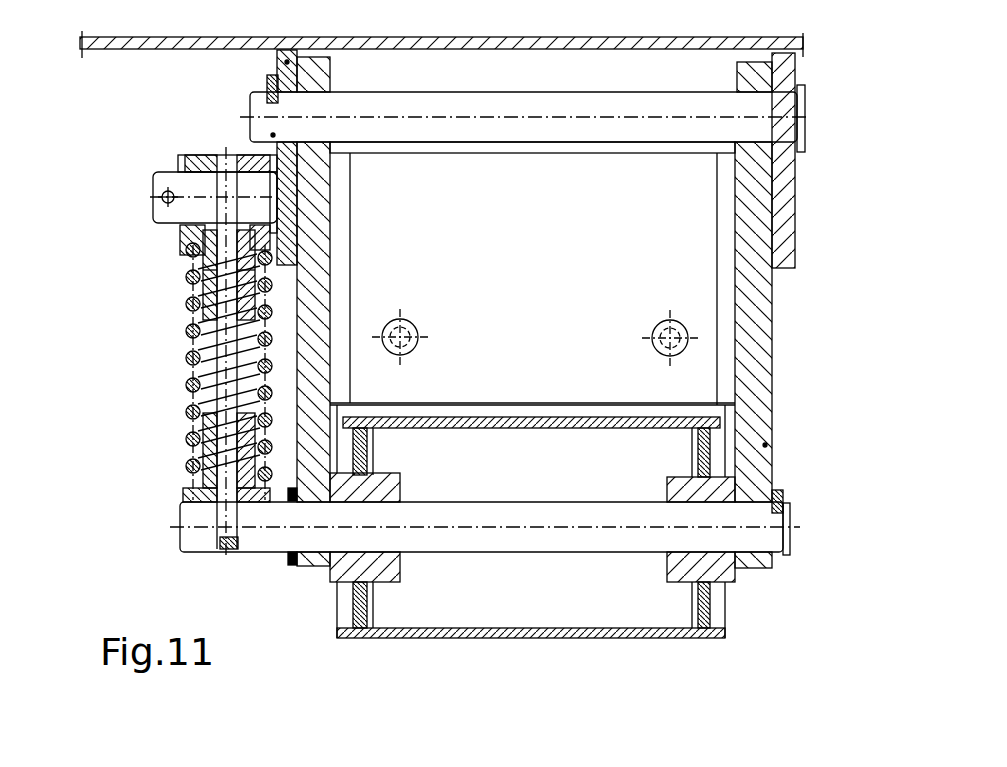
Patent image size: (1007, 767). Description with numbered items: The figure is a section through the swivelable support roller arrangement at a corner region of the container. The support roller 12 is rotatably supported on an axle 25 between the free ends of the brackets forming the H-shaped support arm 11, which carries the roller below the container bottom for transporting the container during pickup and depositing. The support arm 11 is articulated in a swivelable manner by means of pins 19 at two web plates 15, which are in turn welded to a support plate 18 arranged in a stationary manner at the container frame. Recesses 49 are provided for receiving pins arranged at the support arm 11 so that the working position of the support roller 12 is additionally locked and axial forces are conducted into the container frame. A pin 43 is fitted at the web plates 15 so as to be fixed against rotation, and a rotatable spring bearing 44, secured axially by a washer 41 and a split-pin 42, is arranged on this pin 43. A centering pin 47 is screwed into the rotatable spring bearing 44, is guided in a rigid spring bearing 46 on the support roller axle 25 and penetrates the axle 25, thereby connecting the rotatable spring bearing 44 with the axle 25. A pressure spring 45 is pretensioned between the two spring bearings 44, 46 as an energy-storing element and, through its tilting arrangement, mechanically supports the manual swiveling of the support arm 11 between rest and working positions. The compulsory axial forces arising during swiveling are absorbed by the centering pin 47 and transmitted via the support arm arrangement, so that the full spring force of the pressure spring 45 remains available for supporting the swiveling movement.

The support plate 18 is at (419, 57).
The web plates 15 is at (166, 157).
The pins 19 is at (422, 113).
The washer 41 is at (156, 161).
The split-pin 42 is at (156, 204).
The pin 43 is at (152, 249).
The rotatable spring bearing 44 is at (145, 351).
The pressure spring 45 is at (153, 371).
The rigid spring bearing 46 is at (152, 457).
The centering pin 47 is at (136, 540).
The recesses 49 is at (618, 308).
The support arms 11 is at (579, 310).
The axle 25 is at (514, 525).
The support roller 12 is at (594, 521).